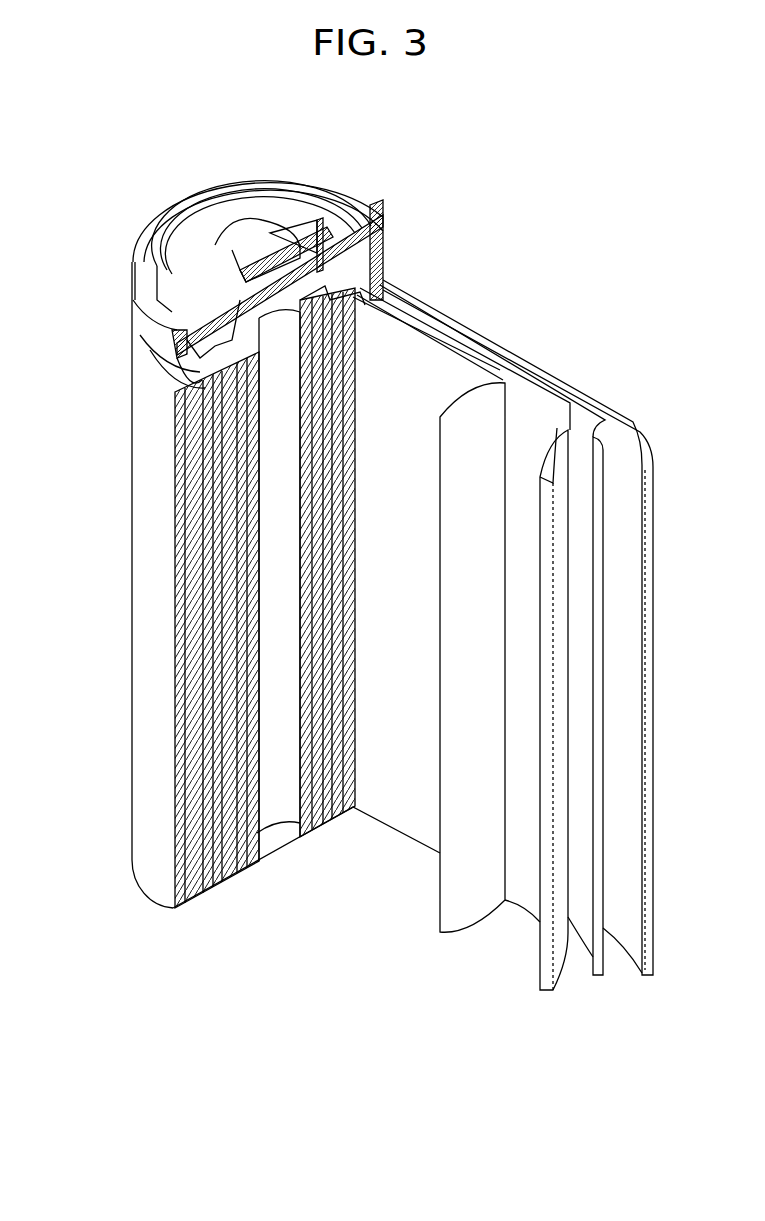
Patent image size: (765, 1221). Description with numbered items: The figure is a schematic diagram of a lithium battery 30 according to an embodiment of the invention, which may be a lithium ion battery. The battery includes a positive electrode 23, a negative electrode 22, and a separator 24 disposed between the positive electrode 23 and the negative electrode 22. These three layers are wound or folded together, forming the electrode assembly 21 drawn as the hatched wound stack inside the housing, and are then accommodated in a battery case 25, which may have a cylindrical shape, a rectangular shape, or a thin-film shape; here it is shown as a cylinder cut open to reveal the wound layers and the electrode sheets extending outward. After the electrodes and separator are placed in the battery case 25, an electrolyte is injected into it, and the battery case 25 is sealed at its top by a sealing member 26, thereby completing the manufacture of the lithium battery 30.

The lithium battery 30 is at (496, 144).
The battery case 25 is at (137, 590).
The sealing member 26 is at (250, 226).
The electrode assembly 21 is at (265, 598).
The negative electrode 22 is at (632, 430).
The positive electrode 23 is at (553, 428).
The separator 24 is at (593, 450).